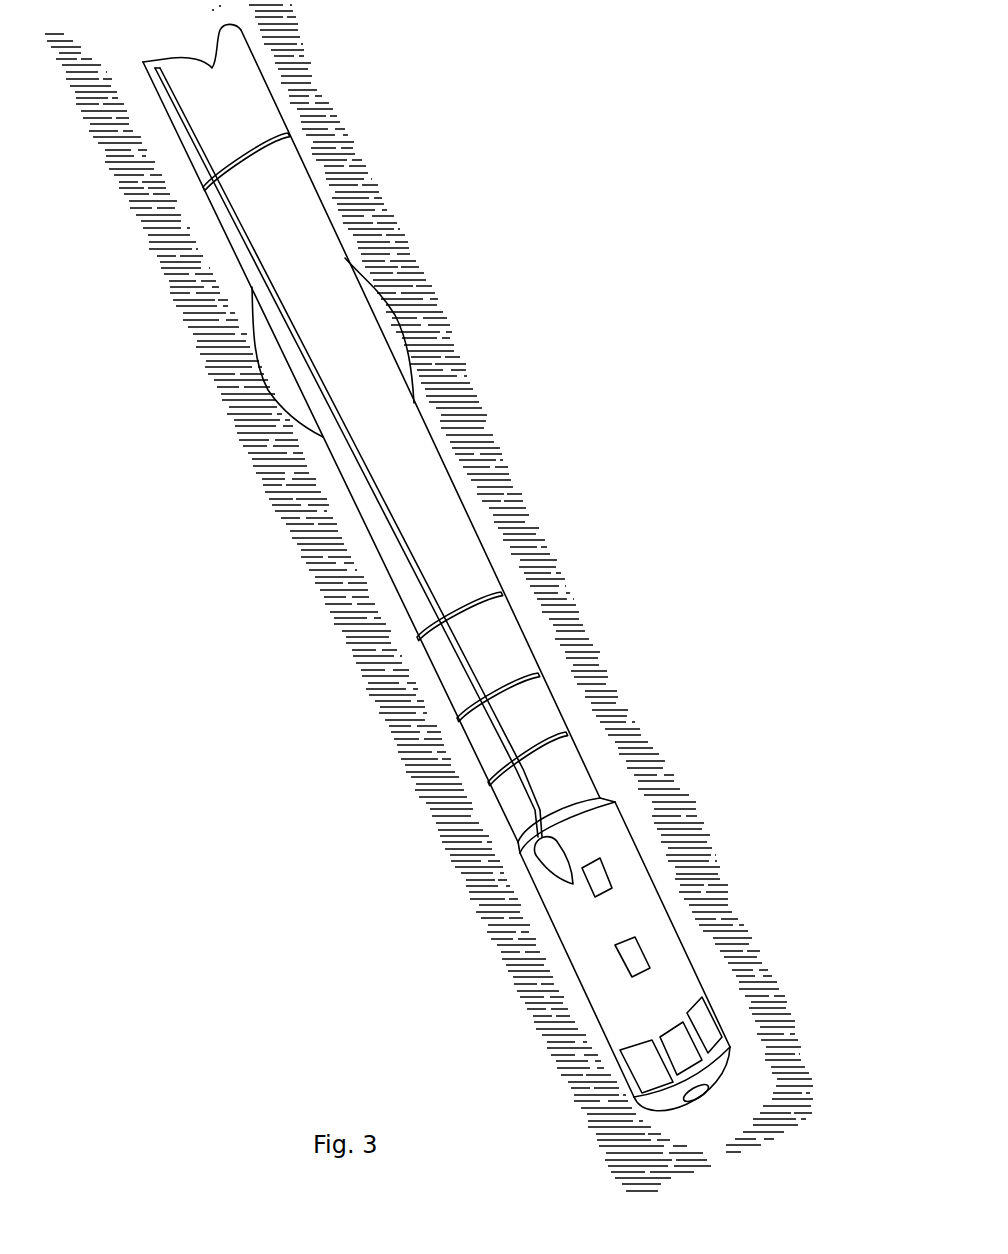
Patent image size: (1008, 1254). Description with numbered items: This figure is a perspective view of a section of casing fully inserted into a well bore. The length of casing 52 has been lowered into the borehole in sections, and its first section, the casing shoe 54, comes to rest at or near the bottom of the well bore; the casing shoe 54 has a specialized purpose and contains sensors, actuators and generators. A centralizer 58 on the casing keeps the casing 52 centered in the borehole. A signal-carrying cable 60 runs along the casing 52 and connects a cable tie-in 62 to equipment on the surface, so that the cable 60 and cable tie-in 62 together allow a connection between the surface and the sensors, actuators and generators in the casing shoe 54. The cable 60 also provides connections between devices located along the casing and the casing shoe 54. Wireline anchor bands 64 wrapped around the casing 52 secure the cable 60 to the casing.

The casing 52 is at (440, 508).
The casing shoe 54 is at (653, 923).
The centralizer 58 is at (382, 292).
The signal-carrying cable 60 is at (357, 465).
The cable tie-in 62 is at (555, 857).
The wireline anchor bands 64 is at (567, 732).